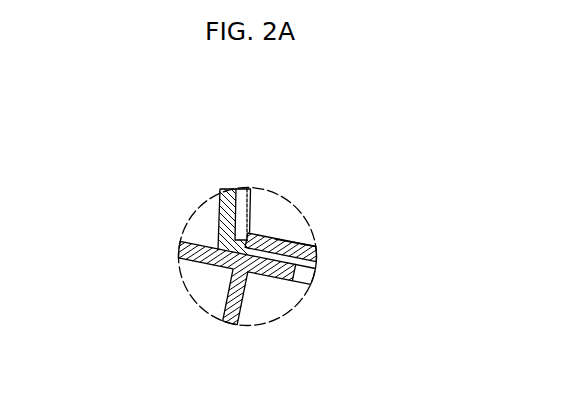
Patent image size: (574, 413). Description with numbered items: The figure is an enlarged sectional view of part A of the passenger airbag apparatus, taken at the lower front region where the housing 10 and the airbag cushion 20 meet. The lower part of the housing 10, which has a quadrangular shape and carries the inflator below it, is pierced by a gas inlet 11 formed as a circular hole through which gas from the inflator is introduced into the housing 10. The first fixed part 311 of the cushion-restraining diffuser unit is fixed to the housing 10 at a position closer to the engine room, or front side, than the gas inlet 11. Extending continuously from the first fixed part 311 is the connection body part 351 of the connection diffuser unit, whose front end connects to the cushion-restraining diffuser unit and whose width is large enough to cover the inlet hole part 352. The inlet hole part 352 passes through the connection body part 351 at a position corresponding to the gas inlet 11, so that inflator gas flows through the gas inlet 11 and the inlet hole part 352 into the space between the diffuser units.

The part A is at (210, 198).
The housing 10 is at (215, 300).
The gas inlet 11 is at (303, 280).
The airbag cushion 20 is at (212, 223).
The first fixed part 311 is at (246, 238).
The connection body part 351 is at (307, 244).
The inlet hole part 352 is at (273, 239).